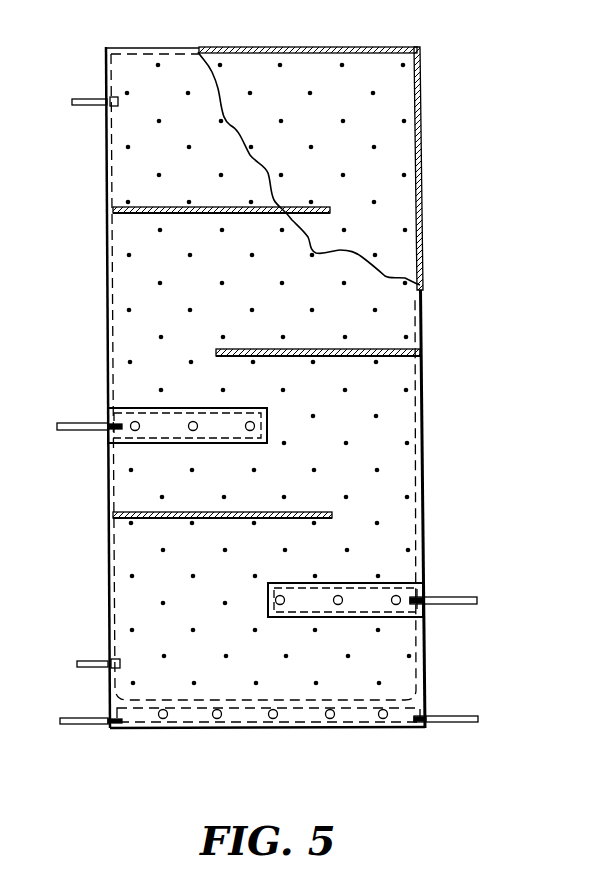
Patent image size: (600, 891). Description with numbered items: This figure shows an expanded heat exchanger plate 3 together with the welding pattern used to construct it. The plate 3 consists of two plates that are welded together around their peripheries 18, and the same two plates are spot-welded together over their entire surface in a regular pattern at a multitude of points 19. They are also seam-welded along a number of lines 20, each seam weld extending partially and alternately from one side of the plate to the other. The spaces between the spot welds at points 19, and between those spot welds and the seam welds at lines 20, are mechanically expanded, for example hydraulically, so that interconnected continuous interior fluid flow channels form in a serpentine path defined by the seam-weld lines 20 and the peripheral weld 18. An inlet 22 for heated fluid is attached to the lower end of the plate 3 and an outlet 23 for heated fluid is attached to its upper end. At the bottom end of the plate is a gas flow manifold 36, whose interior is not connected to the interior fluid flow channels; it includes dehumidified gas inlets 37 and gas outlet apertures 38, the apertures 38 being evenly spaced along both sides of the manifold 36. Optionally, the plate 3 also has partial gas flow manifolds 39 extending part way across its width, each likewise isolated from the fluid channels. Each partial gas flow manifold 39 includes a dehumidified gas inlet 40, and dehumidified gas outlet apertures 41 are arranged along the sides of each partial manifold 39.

The heat exchanger plate 3 is at (452, 136).
The periphery 18 is at (420, 222).
The points 19 is at (375, 310).
The lines 20 is at (120, 208).
The inlet 22 is at (90, 670).
The outlet 23 is at (80, 107).
The gas flow manifold 36 is at (147, 717).
The dehumidified gas inlets 37 is at (77, 725).
The gas outlet apertures 38 is at (382, 720).
The partial gas flow manifolds 39 is at (130, 440).
The dehumidified gas inlet 40 is at (72, 432).
The dehumidified gas outlet apertures 41 is at (190, 424).